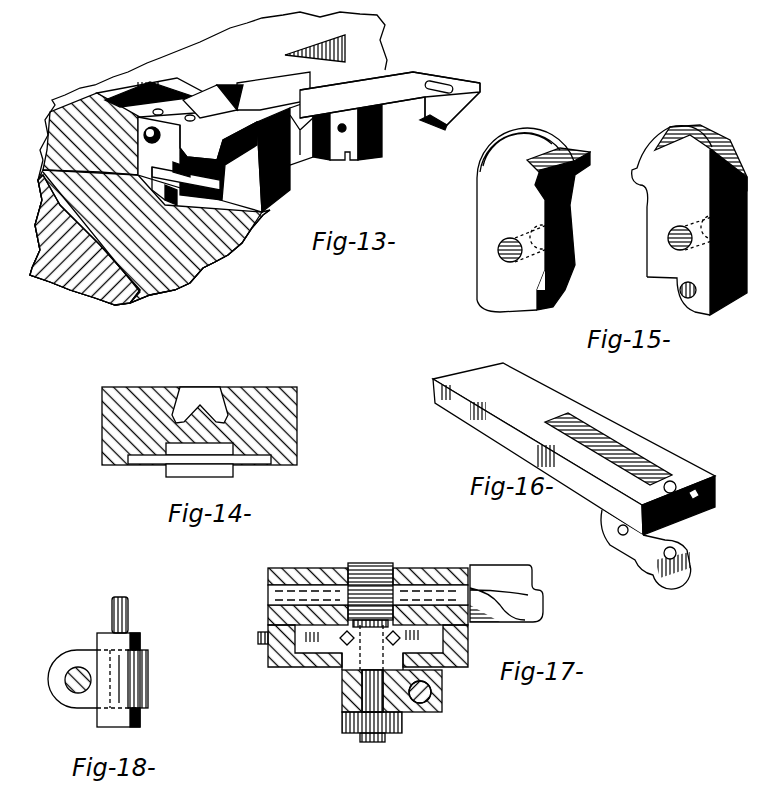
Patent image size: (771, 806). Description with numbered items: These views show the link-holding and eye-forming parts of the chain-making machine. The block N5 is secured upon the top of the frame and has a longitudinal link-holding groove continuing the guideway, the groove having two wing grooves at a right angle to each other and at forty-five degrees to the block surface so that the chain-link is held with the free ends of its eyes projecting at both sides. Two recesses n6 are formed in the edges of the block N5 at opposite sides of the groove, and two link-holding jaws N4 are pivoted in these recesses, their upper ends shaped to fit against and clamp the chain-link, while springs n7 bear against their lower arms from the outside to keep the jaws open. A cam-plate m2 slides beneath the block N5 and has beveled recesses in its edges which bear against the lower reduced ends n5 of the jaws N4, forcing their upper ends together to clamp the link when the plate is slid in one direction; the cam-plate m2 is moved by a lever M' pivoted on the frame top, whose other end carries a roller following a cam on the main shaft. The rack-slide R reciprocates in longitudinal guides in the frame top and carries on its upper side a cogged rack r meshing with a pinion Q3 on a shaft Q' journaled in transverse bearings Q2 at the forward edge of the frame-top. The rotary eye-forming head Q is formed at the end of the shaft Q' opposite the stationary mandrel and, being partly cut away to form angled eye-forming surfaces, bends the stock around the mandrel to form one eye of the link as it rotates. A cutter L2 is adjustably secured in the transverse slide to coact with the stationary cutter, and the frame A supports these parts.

In FIG. 13, the springs n7 is at (145, 82).
In FIG. 13, the recesses n6 is at (203, 103).
In FIG. 13, the block N5 is at (283, 218).
In FIG. 14, the block N5 is at (258, 407).
In FIG. 13, the lever M' is at (390, 87).
In FIG. 15, the link-holding jaws N4 is at (612, 220).
In FIG. 15, the lower reduced ends n5 is at (551, 305).
In FIG. 14, the cam-plate m2 is at (199, 460).
In FIG. 16, the cogged rack r is at (612, 433).
In FIG. 16, the rack-slide R is at (647, 450).
In FIG. 17, the rack-slide R is at (320, 643).
In FIG. 17, the transverse bearings Q2 is at (450, 553).
In FIG. 17, the pinion Q3 is at (367, 562).
In FIG. 17, the shaft Q' is at (368, 571).
In FIG. 17, the rotary eye-forming head Q is at (506, 583).
In FIG. 17, the frame A is at (467, 647).
In FIG. 17, the cutter L2 is at (442, 695).